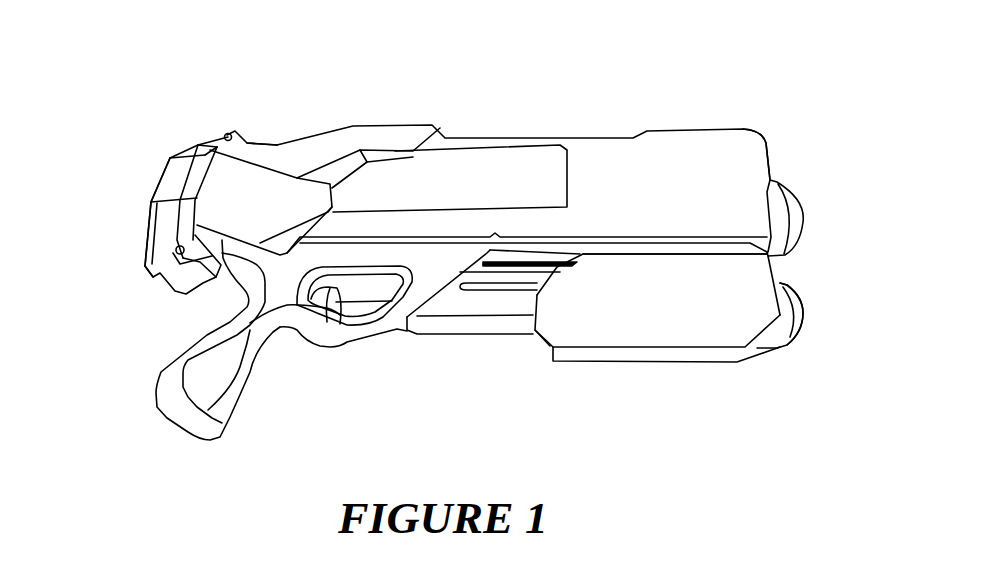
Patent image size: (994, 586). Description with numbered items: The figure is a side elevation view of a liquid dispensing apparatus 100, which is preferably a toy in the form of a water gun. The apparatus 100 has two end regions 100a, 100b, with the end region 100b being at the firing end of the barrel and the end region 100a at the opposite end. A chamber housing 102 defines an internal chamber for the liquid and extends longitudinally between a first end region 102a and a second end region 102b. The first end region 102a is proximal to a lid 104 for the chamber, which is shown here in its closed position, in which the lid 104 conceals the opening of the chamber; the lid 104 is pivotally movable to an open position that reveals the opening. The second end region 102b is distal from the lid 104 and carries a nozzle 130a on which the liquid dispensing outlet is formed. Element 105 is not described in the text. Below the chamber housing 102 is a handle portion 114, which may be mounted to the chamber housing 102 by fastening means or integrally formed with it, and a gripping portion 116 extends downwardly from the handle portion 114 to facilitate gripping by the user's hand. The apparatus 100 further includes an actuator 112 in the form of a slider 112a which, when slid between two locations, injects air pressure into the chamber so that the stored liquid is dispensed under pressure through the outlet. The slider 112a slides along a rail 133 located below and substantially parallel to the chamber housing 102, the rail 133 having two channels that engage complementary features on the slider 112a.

The liquid dispensing apparatus 100 is at (728, 70).
The end region 100a is at (133, 156).
The end region 100b is at (812, 271).
The chamber housing 102 is at (720, 165).
The first end region 102a is at (773, 165).
The second end region 102b is at (227, 132).
The lid 104 is at (149, 228).
The top rail 105 is at (257, 140).
The actuator 112 is at (715, 320).
The slider 112a is at (610, 333).
The handle portion 114 is at (284, 293).
The gripping portion 116 is at (197, 390).
The nozzle 130a is at (784, 209).
The rail 133 is at (503, 322).